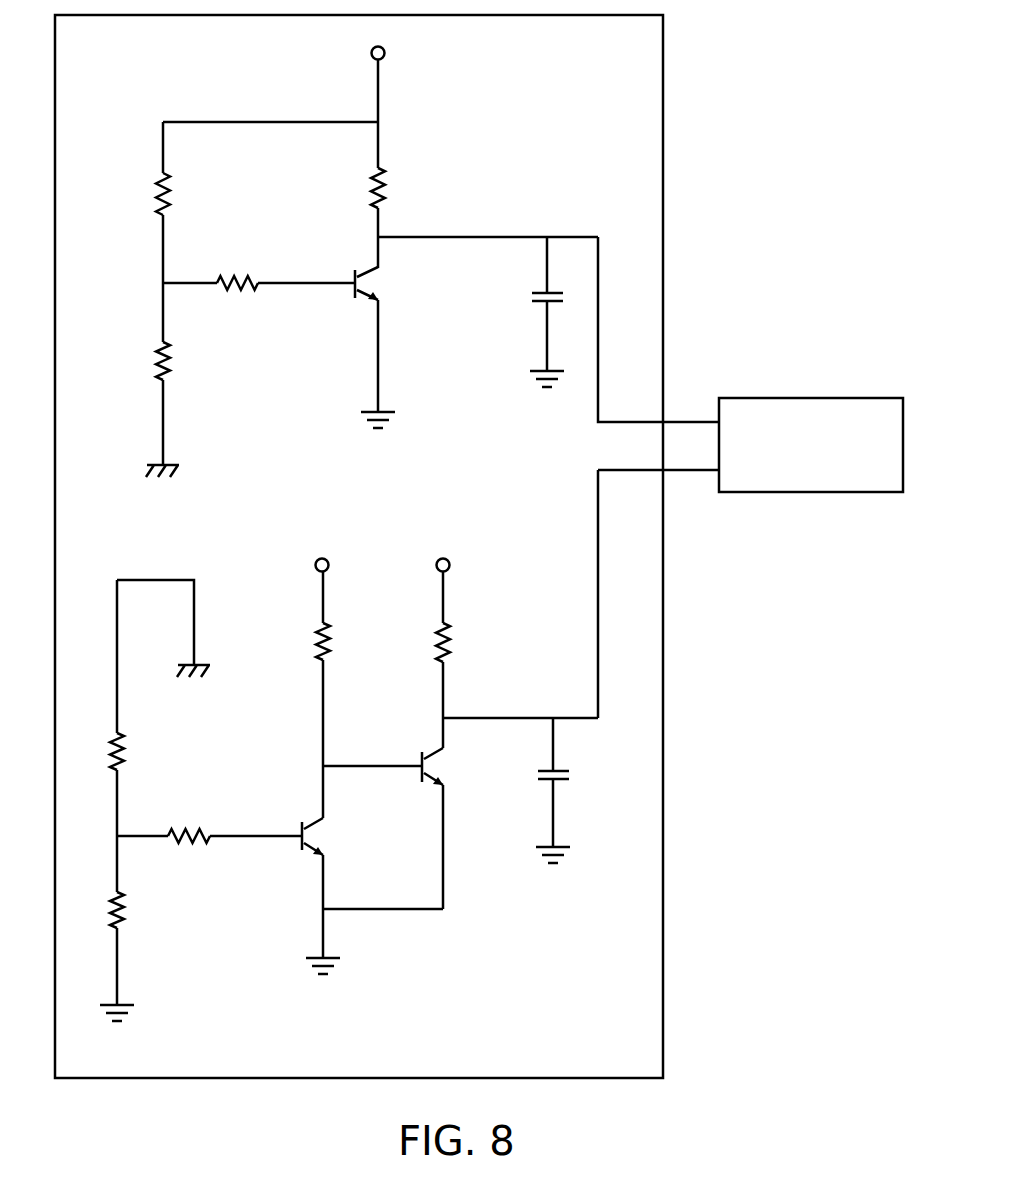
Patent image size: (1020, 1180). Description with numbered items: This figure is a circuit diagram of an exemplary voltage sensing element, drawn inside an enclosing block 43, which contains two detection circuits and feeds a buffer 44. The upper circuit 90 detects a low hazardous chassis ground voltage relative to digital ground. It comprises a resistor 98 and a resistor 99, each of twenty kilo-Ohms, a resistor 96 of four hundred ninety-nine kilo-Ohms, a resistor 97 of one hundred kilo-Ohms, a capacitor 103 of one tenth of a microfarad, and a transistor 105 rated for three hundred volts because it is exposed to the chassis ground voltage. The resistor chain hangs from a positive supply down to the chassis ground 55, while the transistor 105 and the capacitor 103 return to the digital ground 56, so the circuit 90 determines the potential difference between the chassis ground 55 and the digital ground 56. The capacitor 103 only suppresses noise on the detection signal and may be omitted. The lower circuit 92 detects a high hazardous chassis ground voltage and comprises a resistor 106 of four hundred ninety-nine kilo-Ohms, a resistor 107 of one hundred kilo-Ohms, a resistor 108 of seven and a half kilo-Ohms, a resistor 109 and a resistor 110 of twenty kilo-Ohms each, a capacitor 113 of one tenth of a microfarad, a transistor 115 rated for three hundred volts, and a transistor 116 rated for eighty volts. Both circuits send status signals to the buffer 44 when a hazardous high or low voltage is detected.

The sensor circuit enclosure 43 is at (663, 93).
The buffer 44 is at (790, 398).
The circuit 90 is at (152, 90).
The circuit 92 is at (145, 538).
The resistor 98 is at (160, 190).
The resistor 99 is at (374, 190).
The resistor 96 is at (160, 348).
The resistor 97 is at (236, 279).
The transistor 105 is at (366, 268).
The capacitor 103 is at (540, 290).
The chassis ground 55 is at (168, 464).
The digital ground 56 is at (396, 412).
The resistor 106 is at (114, 742).
The resistor 108 is at (114, 900).
The resistor 107 is at (187, 833).
The resistor 109 is at (315, 635).
The resistor 110 is at (435, 635).
The transistor 115 is at (315, 819).
The transistor 116 is at (437, 751).
The capacitor 113 is at (546, 770).